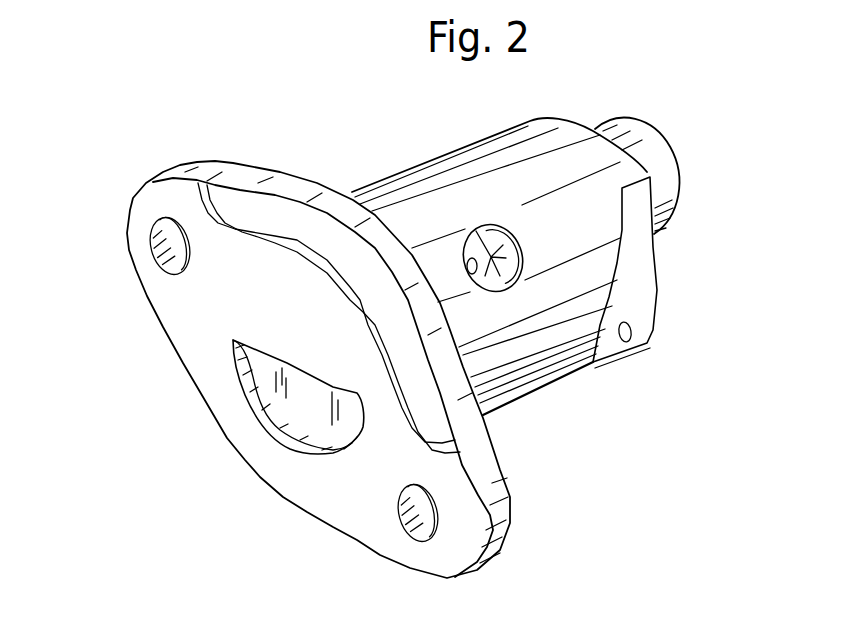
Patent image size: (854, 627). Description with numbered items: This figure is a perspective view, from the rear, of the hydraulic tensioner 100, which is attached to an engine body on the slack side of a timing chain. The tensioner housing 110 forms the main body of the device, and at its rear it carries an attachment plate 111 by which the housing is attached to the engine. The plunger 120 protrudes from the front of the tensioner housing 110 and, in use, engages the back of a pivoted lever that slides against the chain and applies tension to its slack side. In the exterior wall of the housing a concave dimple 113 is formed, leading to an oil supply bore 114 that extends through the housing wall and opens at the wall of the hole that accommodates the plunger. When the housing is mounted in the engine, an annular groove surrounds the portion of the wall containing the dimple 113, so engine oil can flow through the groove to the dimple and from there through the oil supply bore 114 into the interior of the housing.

The hydraulic tensioner 100 is at (182, 412).
The tensioner housing 110 is at (793, 401).
The attachment plate 111 is at (487, 465).
The concave dimple 113 is at (478, 257).
The oil supply bore 114 is at (473, 275).
The plunger 120 is at (652, 153).